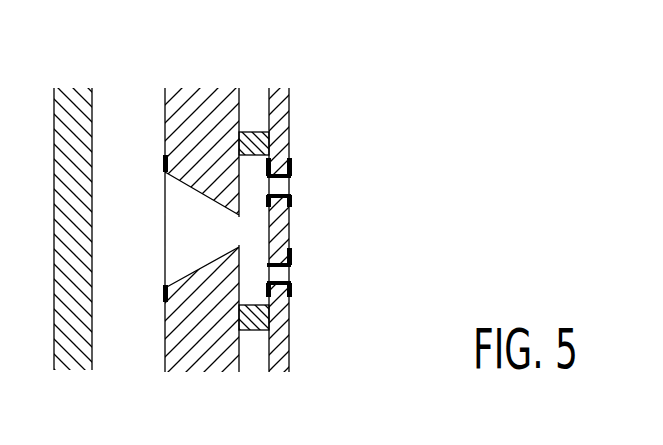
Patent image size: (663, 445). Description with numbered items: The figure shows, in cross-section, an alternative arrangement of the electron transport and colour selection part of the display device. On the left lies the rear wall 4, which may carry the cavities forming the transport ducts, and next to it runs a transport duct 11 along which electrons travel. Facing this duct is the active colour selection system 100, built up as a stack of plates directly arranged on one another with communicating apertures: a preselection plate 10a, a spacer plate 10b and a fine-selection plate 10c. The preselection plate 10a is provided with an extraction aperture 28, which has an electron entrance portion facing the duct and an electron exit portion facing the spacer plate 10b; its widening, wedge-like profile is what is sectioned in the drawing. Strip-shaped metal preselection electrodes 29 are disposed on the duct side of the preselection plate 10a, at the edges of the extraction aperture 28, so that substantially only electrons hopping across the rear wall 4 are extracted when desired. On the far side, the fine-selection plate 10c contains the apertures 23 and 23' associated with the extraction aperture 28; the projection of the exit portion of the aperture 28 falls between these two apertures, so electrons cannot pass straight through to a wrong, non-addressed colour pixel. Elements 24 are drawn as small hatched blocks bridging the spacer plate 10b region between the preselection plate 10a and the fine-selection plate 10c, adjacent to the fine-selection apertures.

The rear wall 4 is at (70, 110).
The transport duct 11 is at (125, 112).
The active colour selection system 100 is at (287, 71).
The preselection plate 10a is at (208, 345).
The spacer plate 10b is at (260, 333).
The fine-selection plate 10c is at (279, 357).
The spacer block 24 is at (288, 158).
The aperture of the fine-selection plate 23 is at (299, 182).
The aperture of the fine-selection plate 23' is at (304, 272).
The extraction aperture 28 is at (198, 220).
The preselection electrode 29 is at (163, 160).